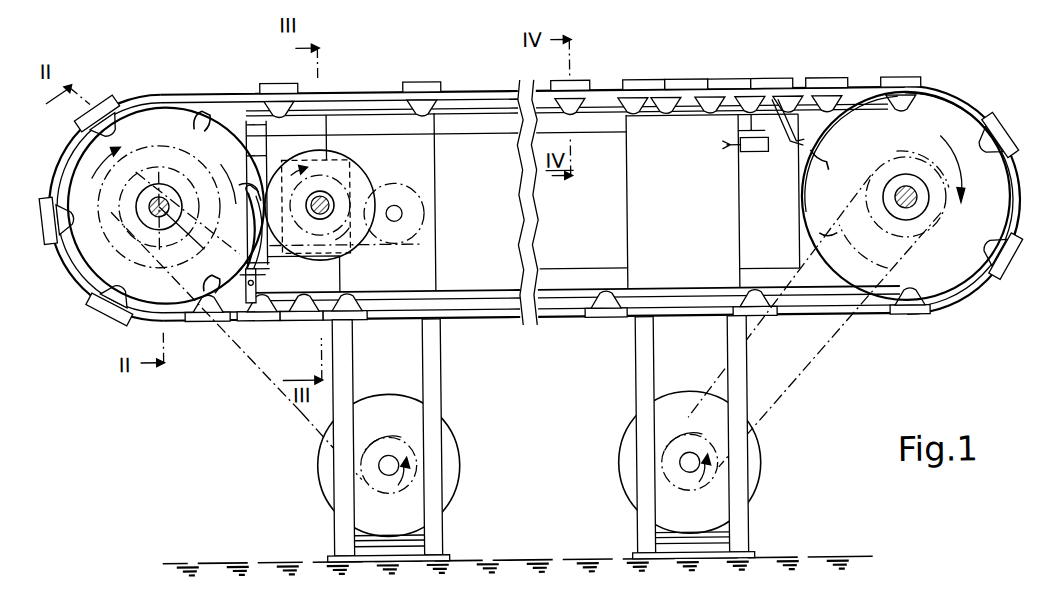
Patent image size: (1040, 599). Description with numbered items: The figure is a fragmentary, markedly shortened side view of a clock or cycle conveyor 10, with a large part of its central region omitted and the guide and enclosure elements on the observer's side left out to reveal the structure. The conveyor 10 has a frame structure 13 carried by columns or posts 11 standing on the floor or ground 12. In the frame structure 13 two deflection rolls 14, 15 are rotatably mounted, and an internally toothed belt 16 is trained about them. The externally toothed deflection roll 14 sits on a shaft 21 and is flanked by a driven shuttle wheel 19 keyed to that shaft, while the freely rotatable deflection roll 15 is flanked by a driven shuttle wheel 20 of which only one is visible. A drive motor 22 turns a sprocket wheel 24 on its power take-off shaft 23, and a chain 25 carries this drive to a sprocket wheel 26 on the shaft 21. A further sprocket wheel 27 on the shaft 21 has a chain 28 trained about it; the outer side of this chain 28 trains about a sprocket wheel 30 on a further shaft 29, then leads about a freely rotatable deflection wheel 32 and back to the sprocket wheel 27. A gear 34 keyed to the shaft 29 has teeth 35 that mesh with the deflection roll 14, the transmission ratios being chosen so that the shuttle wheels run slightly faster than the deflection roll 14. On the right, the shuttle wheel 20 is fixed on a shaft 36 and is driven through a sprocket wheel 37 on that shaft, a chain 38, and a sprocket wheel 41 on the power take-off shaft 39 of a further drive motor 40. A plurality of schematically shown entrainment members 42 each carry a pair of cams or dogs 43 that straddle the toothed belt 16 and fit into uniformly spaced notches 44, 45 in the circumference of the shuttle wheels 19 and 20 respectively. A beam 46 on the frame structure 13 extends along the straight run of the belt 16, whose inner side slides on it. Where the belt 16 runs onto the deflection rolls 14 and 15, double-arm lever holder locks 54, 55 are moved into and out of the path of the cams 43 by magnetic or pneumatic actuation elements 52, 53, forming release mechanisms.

The clock conveyor 10 is at (652, 54).
The columns or posts 11 is at (344, 338).
The floor or ground 12 is at (481, 557).
The frame structure 13 is at (624, 203).
The deflection roll 14 is at (132, 100).
The deflection roll 15 is at (928, 108).
The toothed belt 16 is at (233, 96).
The shuttle wheel 19 is at (172, 114).
The shuttle wheel 20 is at (940, 280).
The shaft 21 is at (152, 208).
The drive motor 22 is at (450, 453).
The power take-off shaft 23 is at (387, 475).
The sprocket wheel 24 is at (360, 466).
The chain 25 is at (278, 389).
The sprocket wheel 26 is at (142, 236).
The sprocket wheel 27 is at (99, 226).
The chain 28 is at (250, 188).
The shaft 29 is at (330, 196).
The sprocket wheel 30 is at (330, 183).
The deflection wheel 32 is at (402, 191).
The gear 34 is at (340, 248).
The teeth 35 is at (364, 243).
The shaft 36 is at (915, 211).
The sprocket wheel 37 is at (906, 161).
The chain 38 is at (808, 381).
The power take-off shaft 39 is at (688, 475).
The drive motor 40 is at (760, 467).
The sprocket wheel 41 is at (686, 442).
The entrainment members 42 is at (426, 78).
The cams or dogs 43 is at (108, 122).
The notches 44 is at (203, 128).
The notches 45 is at (826, 167).
The beam 46 is at (470, 114).
The actuation element 52 is at (256, 300).
The actuation element 53 is at (750, 156).
The holder lock 54 is at (246, 284).
The holder lock 55 is at (790, 140).